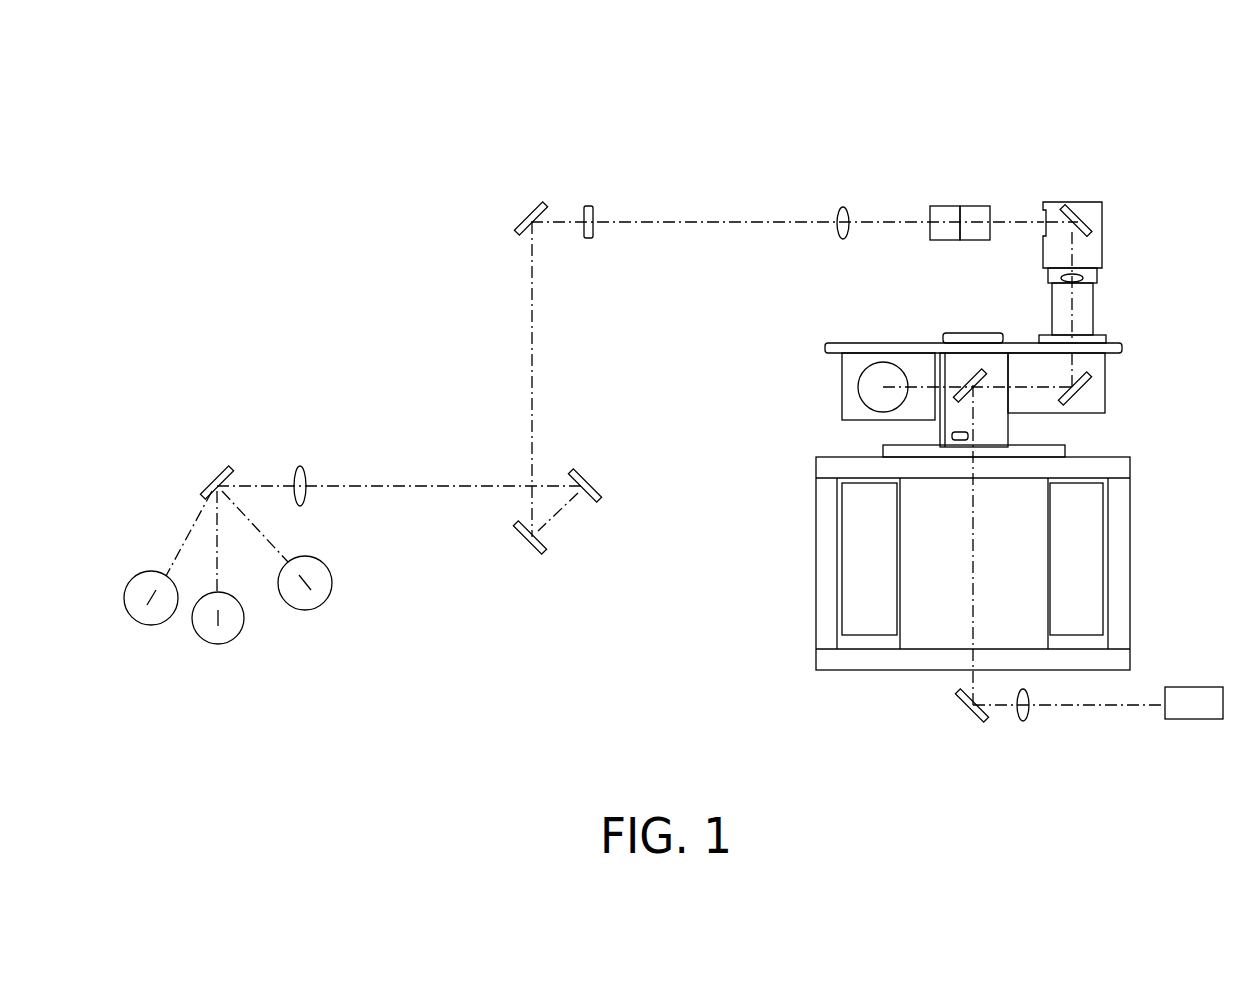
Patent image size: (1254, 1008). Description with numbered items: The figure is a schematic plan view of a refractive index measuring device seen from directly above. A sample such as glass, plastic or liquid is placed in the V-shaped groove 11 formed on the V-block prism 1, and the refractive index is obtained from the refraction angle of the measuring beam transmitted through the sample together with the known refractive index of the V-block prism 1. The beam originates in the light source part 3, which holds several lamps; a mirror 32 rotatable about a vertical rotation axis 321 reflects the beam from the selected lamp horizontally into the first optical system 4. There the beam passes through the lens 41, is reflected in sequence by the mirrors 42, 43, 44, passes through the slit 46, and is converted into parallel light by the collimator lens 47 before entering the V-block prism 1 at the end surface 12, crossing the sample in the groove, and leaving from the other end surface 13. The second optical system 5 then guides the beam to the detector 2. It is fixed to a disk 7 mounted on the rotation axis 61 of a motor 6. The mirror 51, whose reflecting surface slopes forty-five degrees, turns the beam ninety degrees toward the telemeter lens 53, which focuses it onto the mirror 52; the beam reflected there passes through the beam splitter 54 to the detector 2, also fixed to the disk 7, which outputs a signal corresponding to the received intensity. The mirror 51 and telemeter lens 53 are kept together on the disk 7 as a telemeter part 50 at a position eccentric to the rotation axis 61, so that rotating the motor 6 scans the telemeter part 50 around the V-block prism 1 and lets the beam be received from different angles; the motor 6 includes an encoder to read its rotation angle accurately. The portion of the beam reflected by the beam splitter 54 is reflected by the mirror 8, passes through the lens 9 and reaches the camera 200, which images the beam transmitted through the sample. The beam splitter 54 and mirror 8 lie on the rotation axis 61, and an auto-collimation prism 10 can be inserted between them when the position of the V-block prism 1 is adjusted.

The V-block prism 1 is at (960, 171).
The V-shaped groove 11 is at (960, 184).
The end surface 12 is at (930, 210).
The other end surface 13 is at (990, 210).
The detector 2 is at (883, 366).
The light source part 3 is at (225, 592).
The mirror 32 is at (166, 467).
The rotation axis 321 is at (212, 476).
The first optical system 4 is at (571, 346).
The lens 41 is at (302, 465).
The mirror 42 is at (597, 484).
The mirror 43 is at (527, 548).
The mirror 44 is at (523, 219).
The slit 46 is at (590, 206).
The collimator lens 47 is at (843, 208).
The second optical system 5 is at (1126, 215).
The telemeter part 50 is at (1097, 178).
The mirror 51 is at (1072, 202).
The mirror 52 is at (1088, 387).
The telemeter lens 53 is at (1080, 273).
The beam splitter 54 is at (970, 372).
The motor 6 is at (1098, 553).
The rotation axis 61 is at (1002, 427).
The disk 7 is at (830, 340).
The mirror 8 is at (972, 713).
The lens 9 is at (1023, 721).
The auto-collimation prism 10 is at (951, 437).
The camera 200 is at (1192, 720).